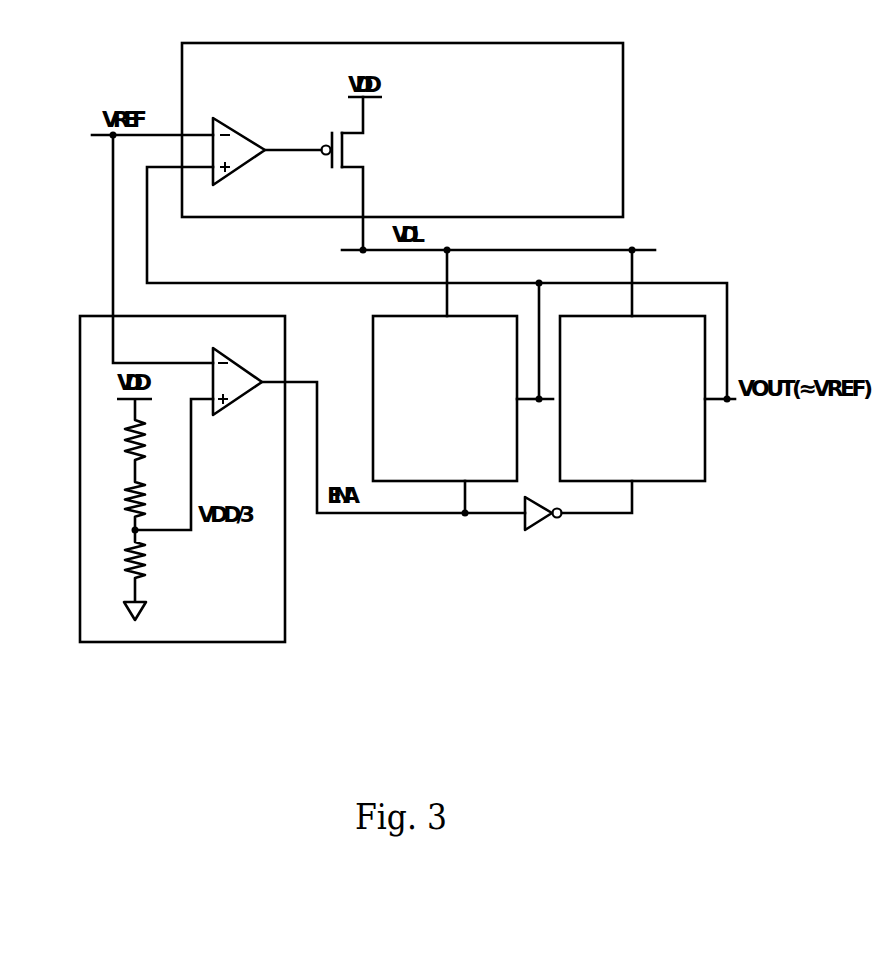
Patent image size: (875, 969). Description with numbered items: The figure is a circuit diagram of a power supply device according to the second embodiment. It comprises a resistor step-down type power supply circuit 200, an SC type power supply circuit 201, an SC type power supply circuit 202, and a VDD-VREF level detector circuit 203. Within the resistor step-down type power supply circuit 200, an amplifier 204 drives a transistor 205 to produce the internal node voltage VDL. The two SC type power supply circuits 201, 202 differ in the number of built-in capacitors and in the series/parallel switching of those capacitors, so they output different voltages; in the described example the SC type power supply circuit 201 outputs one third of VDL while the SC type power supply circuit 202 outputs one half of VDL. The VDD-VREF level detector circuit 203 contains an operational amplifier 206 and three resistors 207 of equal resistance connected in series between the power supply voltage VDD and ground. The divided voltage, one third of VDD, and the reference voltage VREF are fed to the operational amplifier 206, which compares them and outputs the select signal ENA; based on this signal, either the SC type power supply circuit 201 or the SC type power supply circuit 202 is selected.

The resistor step-down type power supply circuit 200 is at (623, 55).
The SC type power supply circuit 201 is at (463, 365).
The SC type power supply circuit 202 is at (648, 365).
The VDD-VREF level detector circuit 203 is at (137, 642).
The differential amplifier 204 is at (227, 118).
The PMOS transistor 205 is at (362, 150).
The operational amplifier 206 is at (249, 367).
The resistors 207 is at (118, 558).